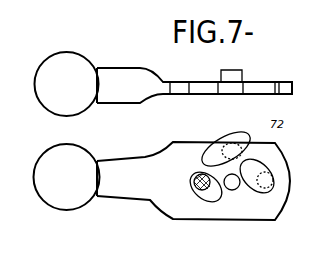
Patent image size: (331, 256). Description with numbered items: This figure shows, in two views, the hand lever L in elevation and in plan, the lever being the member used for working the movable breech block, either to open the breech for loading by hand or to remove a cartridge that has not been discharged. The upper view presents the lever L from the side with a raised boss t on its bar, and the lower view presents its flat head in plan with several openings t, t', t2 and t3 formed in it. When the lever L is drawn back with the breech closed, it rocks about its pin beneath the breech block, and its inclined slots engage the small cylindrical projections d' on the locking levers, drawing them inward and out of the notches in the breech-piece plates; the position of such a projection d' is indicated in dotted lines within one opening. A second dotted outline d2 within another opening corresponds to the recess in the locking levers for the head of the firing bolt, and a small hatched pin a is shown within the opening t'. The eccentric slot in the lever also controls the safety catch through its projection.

The hand lever L is at (163, 136).
The opening / boss t is at (231, 132).
The opening t' is at (205, 188).
The opening t2 is at (258, 180).
The opening t3 is at (188, 157).
The cylindrical projection d' is at (284, 177).
The recess d2 is at (240, 152).
The pin a is at (202, 182).